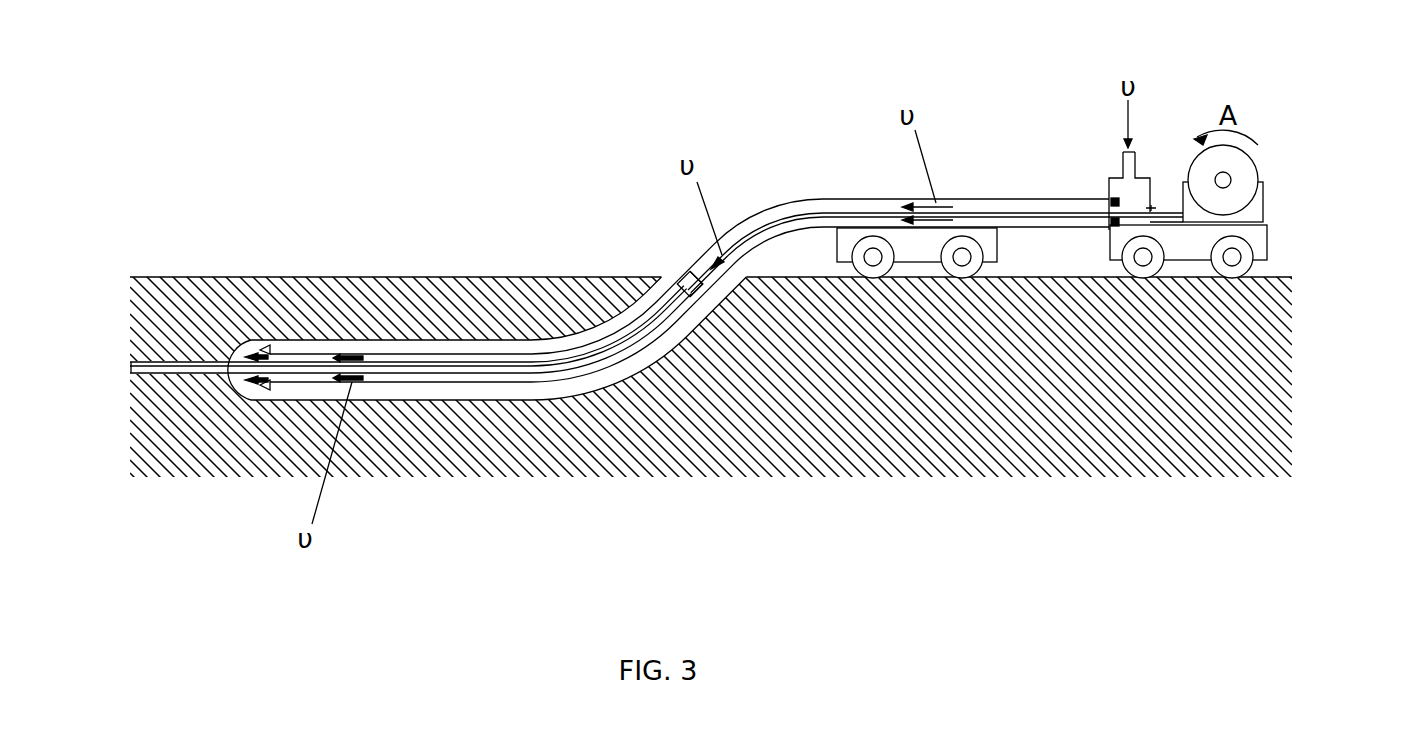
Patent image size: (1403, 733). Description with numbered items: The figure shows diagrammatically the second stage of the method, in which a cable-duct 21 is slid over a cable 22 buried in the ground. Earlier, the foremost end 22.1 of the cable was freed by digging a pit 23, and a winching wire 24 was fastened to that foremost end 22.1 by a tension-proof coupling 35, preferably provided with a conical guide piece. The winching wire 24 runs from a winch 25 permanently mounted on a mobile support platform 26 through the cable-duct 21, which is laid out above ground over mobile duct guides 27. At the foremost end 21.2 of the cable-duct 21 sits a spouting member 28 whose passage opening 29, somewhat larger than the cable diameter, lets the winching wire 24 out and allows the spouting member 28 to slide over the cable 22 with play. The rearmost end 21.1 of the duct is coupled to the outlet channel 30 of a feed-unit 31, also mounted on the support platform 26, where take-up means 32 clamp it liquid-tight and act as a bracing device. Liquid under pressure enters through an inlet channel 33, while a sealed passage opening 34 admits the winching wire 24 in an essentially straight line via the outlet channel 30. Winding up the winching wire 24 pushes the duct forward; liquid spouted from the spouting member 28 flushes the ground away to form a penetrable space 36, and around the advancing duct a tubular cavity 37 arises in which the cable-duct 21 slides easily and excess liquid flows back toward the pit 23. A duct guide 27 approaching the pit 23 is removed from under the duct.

The cable-duct 21 is at (850, 200).
The rearmost end of the cable-duct 21.1 is at (1028, 200).
The foremost end of the cable-duct 21.2 is at (317, 357).
The cable 22 is at (128, 372).
The foremost end of the cable 22.1 is at (685, 280).
The pit 23 is at (742, 272).
The winching wire 24 is at (787, 210).
The winch 25 is at (1265, 197).
The mobile support platform 26 is at (1267, 242).
The mobile duct guide 27 is at (997, 240).
The spouting member 28 is at (262, 350).
The passage opening of the spouting member 29 is at (280, 360).
The outlet channel 30 is at (1148, 207).
The feed-unit 31 is at (1100, 162).
The take-up means 32 is at (1113, 200).
The inlet channel 33 is at (1135, 203).
The passage opening of the feed-unit 34 is at (1153, 203).
The tension-proof coupling 35 is at (693, 284).
The penetrable space 36 is at (233, 347).
The tubular cavity 37 is at (460, 350).